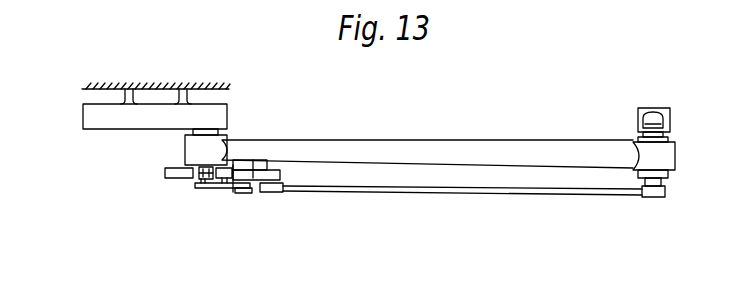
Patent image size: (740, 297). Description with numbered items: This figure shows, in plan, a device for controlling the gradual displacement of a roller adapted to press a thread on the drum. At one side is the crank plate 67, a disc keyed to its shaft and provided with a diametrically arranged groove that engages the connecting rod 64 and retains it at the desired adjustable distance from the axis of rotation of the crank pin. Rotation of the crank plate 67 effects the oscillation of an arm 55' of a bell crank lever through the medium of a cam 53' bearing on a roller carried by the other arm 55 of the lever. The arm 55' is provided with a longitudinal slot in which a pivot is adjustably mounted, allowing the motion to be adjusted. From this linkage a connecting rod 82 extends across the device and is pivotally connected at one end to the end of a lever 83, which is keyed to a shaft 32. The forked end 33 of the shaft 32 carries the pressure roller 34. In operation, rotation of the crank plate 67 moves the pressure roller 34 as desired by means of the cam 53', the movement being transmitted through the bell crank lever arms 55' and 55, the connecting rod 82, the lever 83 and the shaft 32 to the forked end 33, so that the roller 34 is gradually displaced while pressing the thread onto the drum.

The crank plate 67 is at (94, 119).
The connecting rod 64 is at (495, 148).
The arm of bell crank lever 55' is at (257, 147).
The cam 53' is at (179, 196).
The arm of bell crank lever 55 is at (223, 204).
The connecting rod 82 is at (335, 192).
The shaft 32 is at (640, 138).
The forked end 33 is at (638, 113).
The pressure roller 34 is at (650, 108).
The lever 83 is at (654, 197).